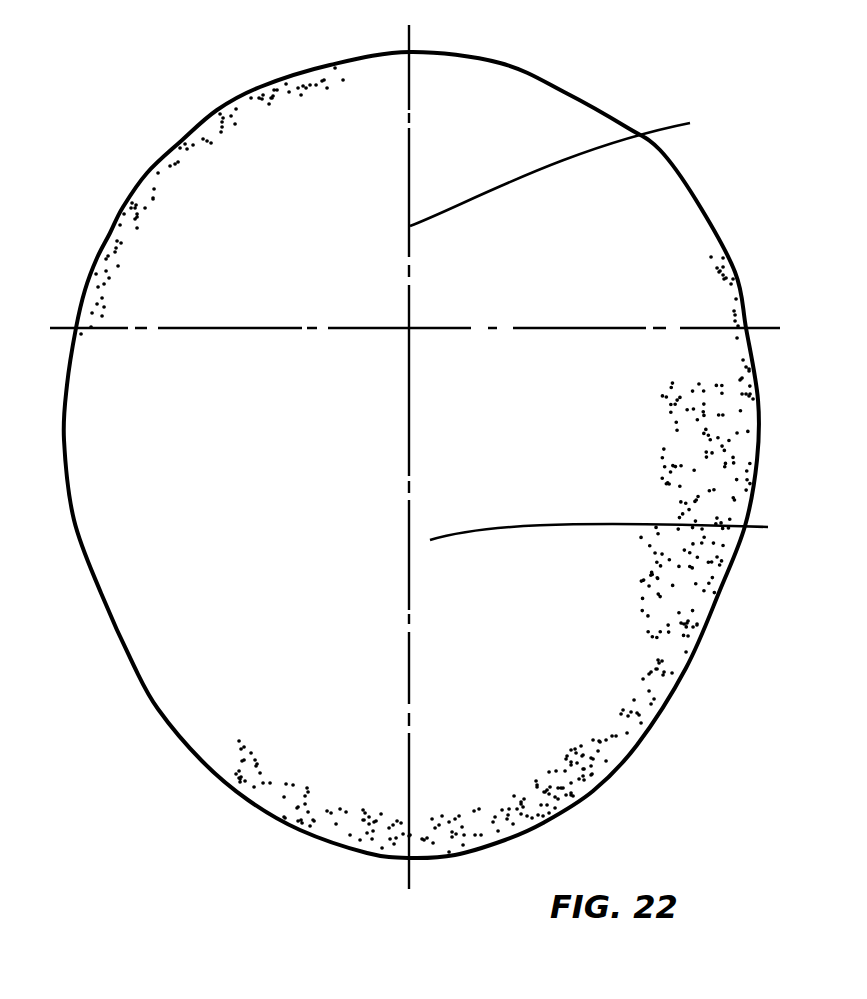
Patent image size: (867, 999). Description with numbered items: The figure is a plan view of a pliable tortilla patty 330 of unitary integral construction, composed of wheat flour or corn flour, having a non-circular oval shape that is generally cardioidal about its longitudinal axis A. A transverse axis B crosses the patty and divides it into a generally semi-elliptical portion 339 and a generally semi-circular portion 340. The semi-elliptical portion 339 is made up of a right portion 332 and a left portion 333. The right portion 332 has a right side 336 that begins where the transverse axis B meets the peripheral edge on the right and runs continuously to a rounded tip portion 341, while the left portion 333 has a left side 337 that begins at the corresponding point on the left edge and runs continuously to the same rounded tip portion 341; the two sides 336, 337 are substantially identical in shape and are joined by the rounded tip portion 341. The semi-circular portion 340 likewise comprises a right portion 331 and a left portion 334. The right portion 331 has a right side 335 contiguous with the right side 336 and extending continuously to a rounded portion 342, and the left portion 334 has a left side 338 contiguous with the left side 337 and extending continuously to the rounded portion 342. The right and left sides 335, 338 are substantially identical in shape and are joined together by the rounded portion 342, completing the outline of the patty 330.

The tortilla patty 330 is at (666, 97).
The right portion of the semi-circular portion 331 is at (380, 135).
The right portion of the semi-elliptical portion 332 is at (290, 758).
The left portion of the semi-elliptical portion 333 is at (558, 778).
The left portion of the semi-circular portion 334 is at (675, 228).
The right side of the semi-circular portion 335 is at (217, 110).
The right side of the semi-elliptical portion 336 is at (143, 690).
The left side of the semi-elliptical portion 337 is at (704, 646).
The left side of the semi-circular portion 338 is at (734, 272).
The semi-elliptical portion 339 is at (625, 530).
The semi-circular portion 340 is at (574, 169).
The rounded tip portion 341 is at (413, 862).
The rounded portion 342 is at (417, 53).
The longitudinal axis A is at (408, 446).
The transverse axis B is at (533, 328).